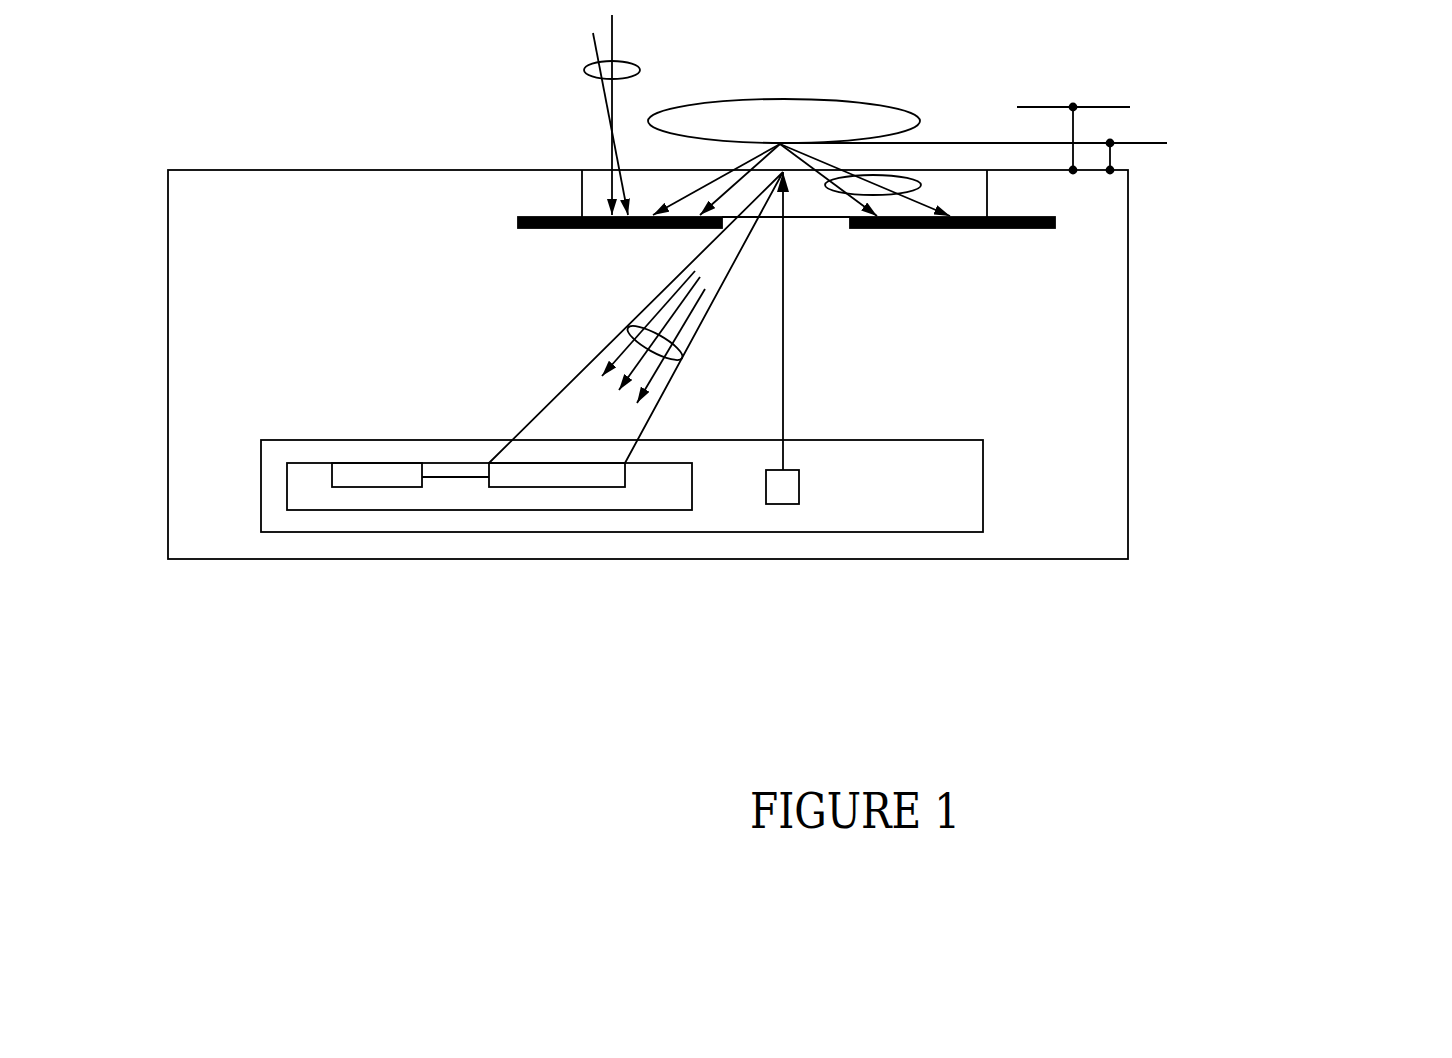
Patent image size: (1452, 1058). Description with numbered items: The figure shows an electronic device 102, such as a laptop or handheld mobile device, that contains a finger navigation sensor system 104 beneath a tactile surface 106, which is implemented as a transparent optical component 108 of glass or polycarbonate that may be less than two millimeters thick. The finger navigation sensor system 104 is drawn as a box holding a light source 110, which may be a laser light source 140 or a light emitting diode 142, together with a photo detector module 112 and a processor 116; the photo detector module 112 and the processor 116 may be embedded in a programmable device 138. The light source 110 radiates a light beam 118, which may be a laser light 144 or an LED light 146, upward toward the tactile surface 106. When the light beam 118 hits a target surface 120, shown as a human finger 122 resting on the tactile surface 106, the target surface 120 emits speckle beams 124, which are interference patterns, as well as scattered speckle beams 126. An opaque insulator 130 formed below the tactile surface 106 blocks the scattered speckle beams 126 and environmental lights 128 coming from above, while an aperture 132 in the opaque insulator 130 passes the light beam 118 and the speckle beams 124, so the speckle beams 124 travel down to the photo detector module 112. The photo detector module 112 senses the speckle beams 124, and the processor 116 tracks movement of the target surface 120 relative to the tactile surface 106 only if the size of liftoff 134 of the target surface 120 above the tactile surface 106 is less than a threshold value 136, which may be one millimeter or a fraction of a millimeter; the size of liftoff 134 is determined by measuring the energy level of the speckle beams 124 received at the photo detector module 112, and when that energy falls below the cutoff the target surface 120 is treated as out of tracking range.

The electronic device 102 is at (1128, 502).
The finger navigation sensor system 104 is at (702, 532).
The tactile surface 106 is at (567, 161).
The transparent optical component 108 is at (600, 183).
The light source 110 is at (1108, 553).
The photo detector module 112 is at (542, 485).
The processor 116 is at (357, 485).
The light beam 118 is at (1073, 321).
The target surface 120 is at (946, 103).
The human finger 122 is at (797, 111).
The speckle beams 124 is at (628, 338).
The scattered speckle beams 126 is at (907, 180).
The environmental lights 128 is at (584, 70).
The opaque insulator 130 is at (1055, 226).
The aperture 132 is at (812, 223).
The size of liftoff 134 is at (1110, 155).
The threshold value 136 is at (1075, 124).
The programmable device 138 is at (330, 510).
The laser light source 140 is at (1108, 553).
The light emitting diode 142 is at (800, 487).
The laser light 144 is at (1073, 321).
The LED light 146 is at (783, 388).